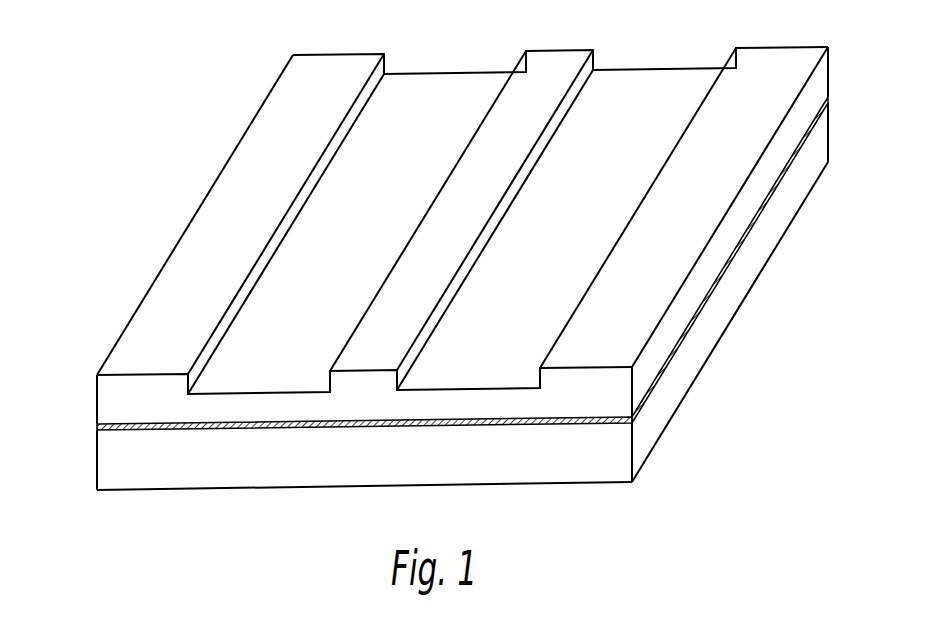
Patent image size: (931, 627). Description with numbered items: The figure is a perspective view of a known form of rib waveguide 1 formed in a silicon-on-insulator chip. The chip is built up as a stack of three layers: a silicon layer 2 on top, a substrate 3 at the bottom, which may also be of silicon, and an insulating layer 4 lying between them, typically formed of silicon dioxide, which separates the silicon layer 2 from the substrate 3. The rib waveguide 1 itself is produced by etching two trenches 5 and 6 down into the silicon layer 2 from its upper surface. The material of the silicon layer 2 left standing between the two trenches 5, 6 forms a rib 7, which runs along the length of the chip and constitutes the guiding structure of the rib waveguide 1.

The rib waveguide 1 is at (500, 57).
The silicon layer 2 is at (112, 403).
The substrate 3 is at (112, 462).
The insulating layer 4 is at (712, 290).
The trench 5 is at (315, 284).
The trench 6 is at (522, 282).
The rib 7 is at (470, 172).